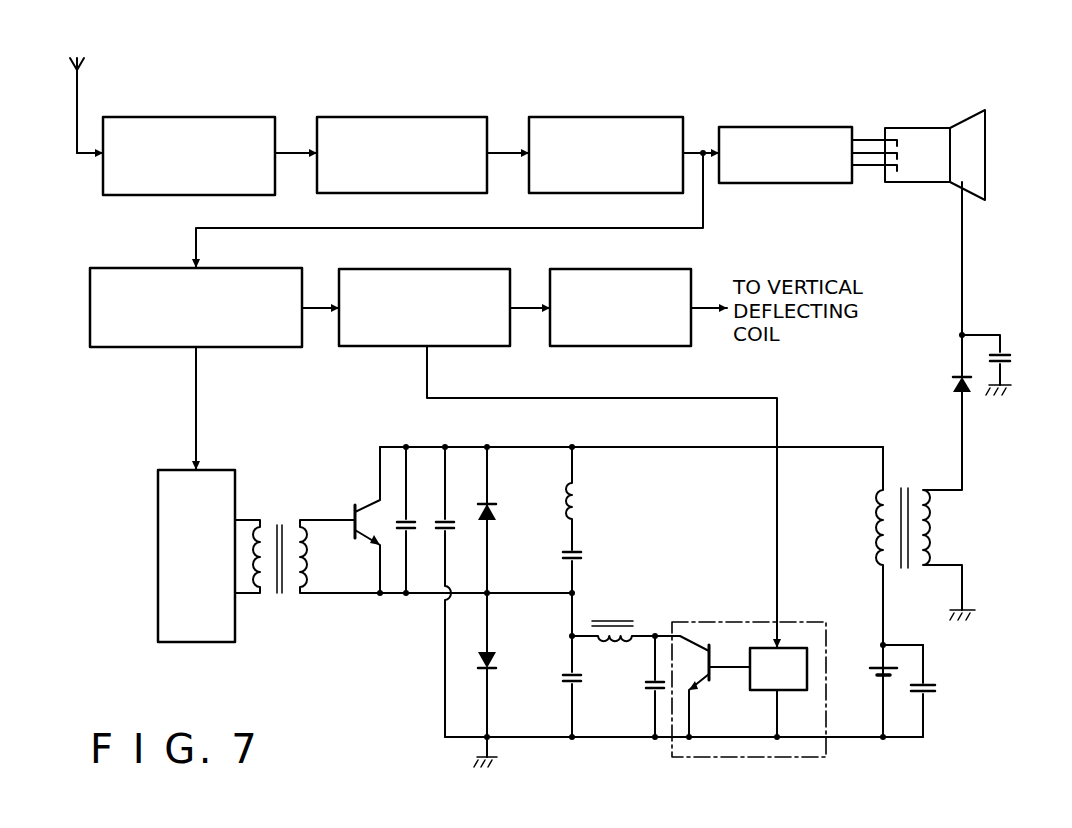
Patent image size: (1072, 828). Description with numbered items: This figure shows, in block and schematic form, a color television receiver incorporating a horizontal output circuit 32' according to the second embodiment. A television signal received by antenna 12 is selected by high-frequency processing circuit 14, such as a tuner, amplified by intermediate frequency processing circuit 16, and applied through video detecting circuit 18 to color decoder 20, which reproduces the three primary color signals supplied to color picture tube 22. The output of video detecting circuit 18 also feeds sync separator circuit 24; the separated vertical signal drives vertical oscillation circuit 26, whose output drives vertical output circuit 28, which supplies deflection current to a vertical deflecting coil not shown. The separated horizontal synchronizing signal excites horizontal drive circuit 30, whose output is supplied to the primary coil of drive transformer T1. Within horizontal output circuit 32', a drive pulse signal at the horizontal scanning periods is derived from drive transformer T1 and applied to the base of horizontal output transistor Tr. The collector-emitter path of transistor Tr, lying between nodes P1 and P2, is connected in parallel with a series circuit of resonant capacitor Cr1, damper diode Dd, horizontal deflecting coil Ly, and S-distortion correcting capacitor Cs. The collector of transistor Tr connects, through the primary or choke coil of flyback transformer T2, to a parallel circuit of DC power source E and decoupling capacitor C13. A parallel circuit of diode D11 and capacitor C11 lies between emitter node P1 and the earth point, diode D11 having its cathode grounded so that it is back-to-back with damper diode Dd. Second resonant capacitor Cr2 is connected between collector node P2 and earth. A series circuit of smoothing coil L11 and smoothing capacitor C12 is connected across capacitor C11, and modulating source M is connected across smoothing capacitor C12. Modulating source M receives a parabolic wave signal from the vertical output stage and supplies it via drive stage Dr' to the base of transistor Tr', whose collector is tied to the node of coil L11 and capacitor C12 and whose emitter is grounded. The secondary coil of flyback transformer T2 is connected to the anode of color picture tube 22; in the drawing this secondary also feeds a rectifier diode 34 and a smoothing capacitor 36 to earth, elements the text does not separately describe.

The antenna 12 is at (85, 68).
The high-frequency (RF) processing circuit 14 is at (190, 117).
The intermediate frequency (IF) processing circuit 16 is at (398, 117).
The video detecting circuit 18 is at (600, 117).
The color decoder 20 is at (777, 127).
The color picture tube 22 is at (917, 128).
The sync separator circuit 24 is at (90, 309).
The vertical oscillation circuit 26 is at (396, 346).
The vertical output circuit 28 is at (625, 346).
The horizontal drive circuit 30 is at (158, 553).
The horizontal output circuit 32' is at (684, 766).
The rectifier diode 34 is at (954, 387).
The smoothing capacitor 36 is at (1013, 356).
The drive transformer T1 is at (307, 542).
The flyback transformer T2 is at (925, 564).
The horizontal output transistor Tr is at (350, 520).
The resonant capacitor Cr1 is at (419, 520).
The second resonant capacitor Cr2 is at (458, 592).
The damper diode Dd is at (502, 520).
The horizontal deflecting coil Ly is at (586, 497).
The S-distortion correcting capacitor Cs is at (586, 570).
The diode D11 is at (503, 680).
The capacitor C11 is at (589, 665).
The smoothing coil L11 is at (640, 629).
The smoothing capacitor C12 is at (636, 685).
The decoupling capacitor C13 is at (942, 691).
The DC power source E is at (888, 663).
The modulating source M is at (798, 622).
The transistor Tr' is at (719, 691).
The drive stage Dr' is at (778, 692).
The node P1 is at (402, 600).
The node P2 is at (408, 447).